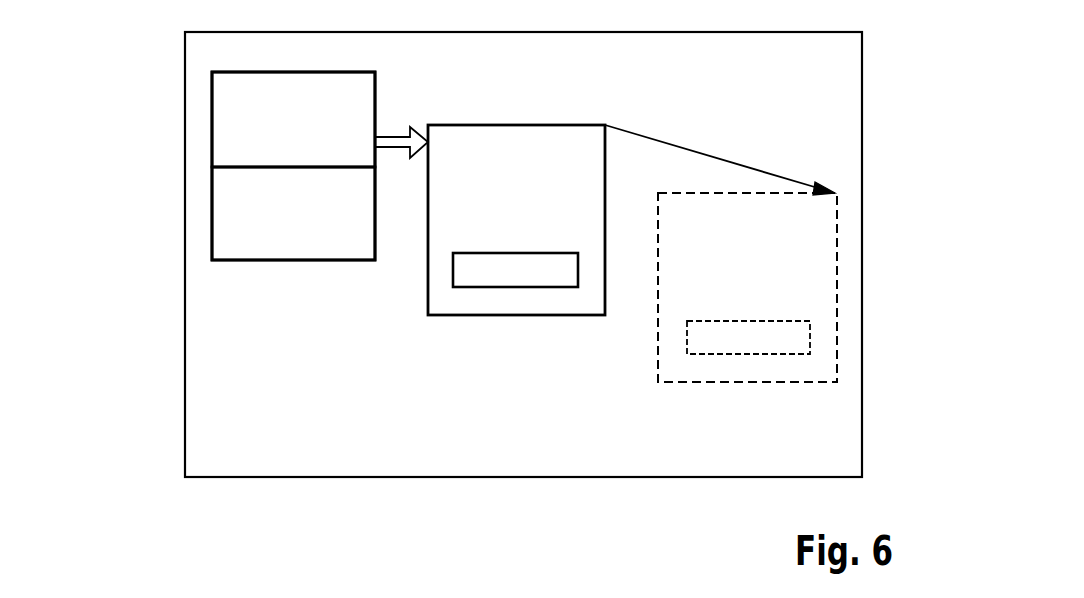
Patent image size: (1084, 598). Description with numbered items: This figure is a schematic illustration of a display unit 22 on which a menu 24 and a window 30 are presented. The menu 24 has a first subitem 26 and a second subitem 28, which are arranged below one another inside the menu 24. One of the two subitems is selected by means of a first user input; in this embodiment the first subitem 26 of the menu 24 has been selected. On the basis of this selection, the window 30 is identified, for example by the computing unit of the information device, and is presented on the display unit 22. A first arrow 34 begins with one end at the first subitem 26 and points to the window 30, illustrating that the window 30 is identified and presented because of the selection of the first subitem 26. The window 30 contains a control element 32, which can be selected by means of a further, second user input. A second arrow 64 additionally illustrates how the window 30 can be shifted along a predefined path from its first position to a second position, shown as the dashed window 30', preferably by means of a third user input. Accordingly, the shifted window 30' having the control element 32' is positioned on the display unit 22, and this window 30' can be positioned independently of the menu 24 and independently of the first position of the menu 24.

The display unit 22 is at (185, 85).
The menu 24 is at (212, 186).
The first subitem 26 is at (357, 103).
The second subitem 28 is at (266, 248).
The window 30 is at (516, 193).
The control element 32 is at (515, 236).
The first arrow 34 is at (396, 143).
The second arrow 64 is at (698, 152).
The window 30' is at (712, 287).
The control element 32' is at (748, 304).